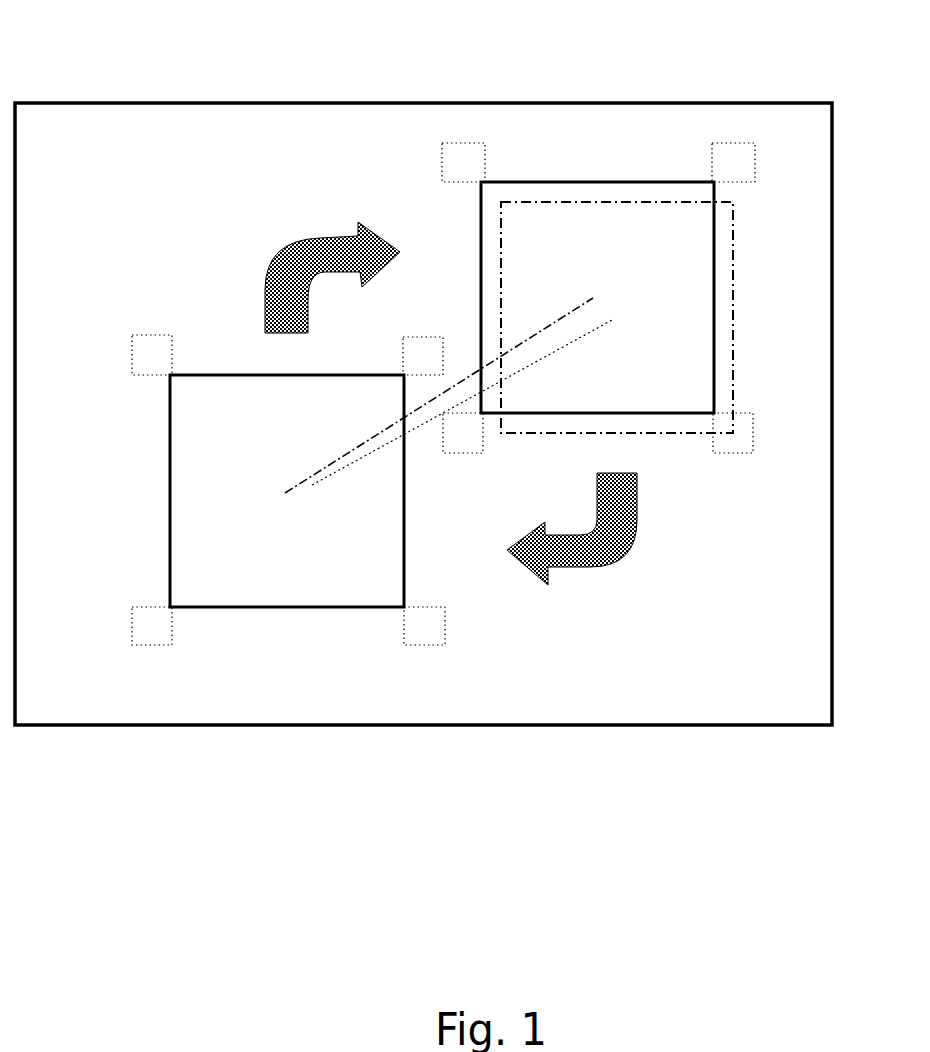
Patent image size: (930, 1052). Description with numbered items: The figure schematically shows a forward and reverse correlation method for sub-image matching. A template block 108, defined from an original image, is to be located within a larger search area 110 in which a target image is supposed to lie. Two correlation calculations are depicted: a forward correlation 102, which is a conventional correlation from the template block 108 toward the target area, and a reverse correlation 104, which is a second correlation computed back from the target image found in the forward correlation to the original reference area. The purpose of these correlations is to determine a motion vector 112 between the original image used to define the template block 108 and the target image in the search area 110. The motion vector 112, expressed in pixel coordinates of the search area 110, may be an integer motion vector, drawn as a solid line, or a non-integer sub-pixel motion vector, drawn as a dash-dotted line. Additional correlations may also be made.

The forward correlation 102 is at (267, 258).
The reverse correlation 104 is at (632, 548).
The template block 108 is at (158, 512).
The search area 110 is at (413, 93).
The motion vector 112 is at (413, 437).